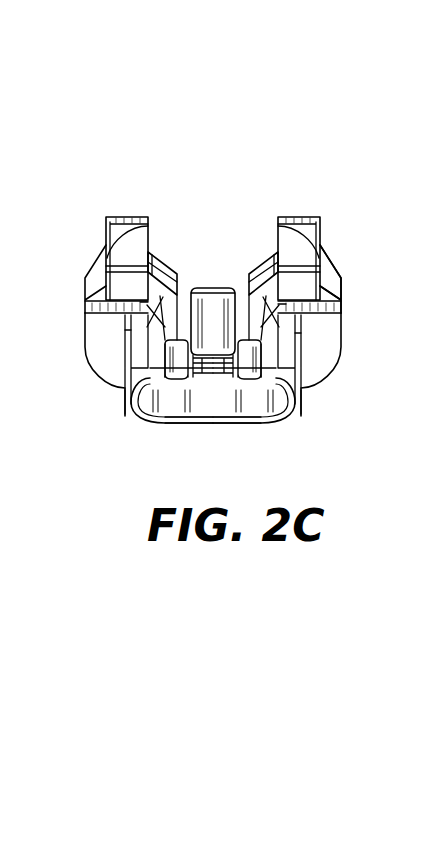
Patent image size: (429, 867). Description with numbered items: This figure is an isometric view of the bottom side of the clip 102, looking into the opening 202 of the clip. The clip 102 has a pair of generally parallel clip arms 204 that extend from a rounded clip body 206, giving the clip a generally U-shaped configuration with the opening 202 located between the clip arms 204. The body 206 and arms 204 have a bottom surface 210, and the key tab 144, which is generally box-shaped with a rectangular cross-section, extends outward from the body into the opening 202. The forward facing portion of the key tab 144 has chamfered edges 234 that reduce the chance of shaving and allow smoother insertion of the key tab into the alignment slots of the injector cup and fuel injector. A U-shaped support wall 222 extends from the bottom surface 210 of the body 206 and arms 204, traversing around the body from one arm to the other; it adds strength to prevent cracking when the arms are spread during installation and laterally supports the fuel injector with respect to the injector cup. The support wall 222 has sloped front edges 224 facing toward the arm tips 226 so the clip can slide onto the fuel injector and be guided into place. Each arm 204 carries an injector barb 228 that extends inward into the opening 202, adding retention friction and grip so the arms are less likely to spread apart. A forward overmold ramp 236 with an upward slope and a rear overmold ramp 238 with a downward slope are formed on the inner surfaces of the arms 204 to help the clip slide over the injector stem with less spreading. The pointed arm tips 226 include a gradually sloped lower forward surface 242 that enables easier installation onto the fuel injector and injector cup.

The clip 102 is at (86, 80).
The clip arms 204 is at (367, 170).
The arm tips 226 is at (120, 216).
The injector barb 228 is at (162, 259).
The lower forward surface 242 is at (322, 258).
The forward overmold ramp 236 is at (147, 302).
The key tab 144 is at (215, 287).
The opening 202 is at (232, 280).
The clip body 206 is at (104, 398).
The bottom surface 210 is at (84, 348).
The rear overmold ramp 238 is at (135, 329).
The sloped front edges 224 is at (125, 416).
The support wall 222 is at (288, 423).
The chamfered edges 234 is at (180, 423).